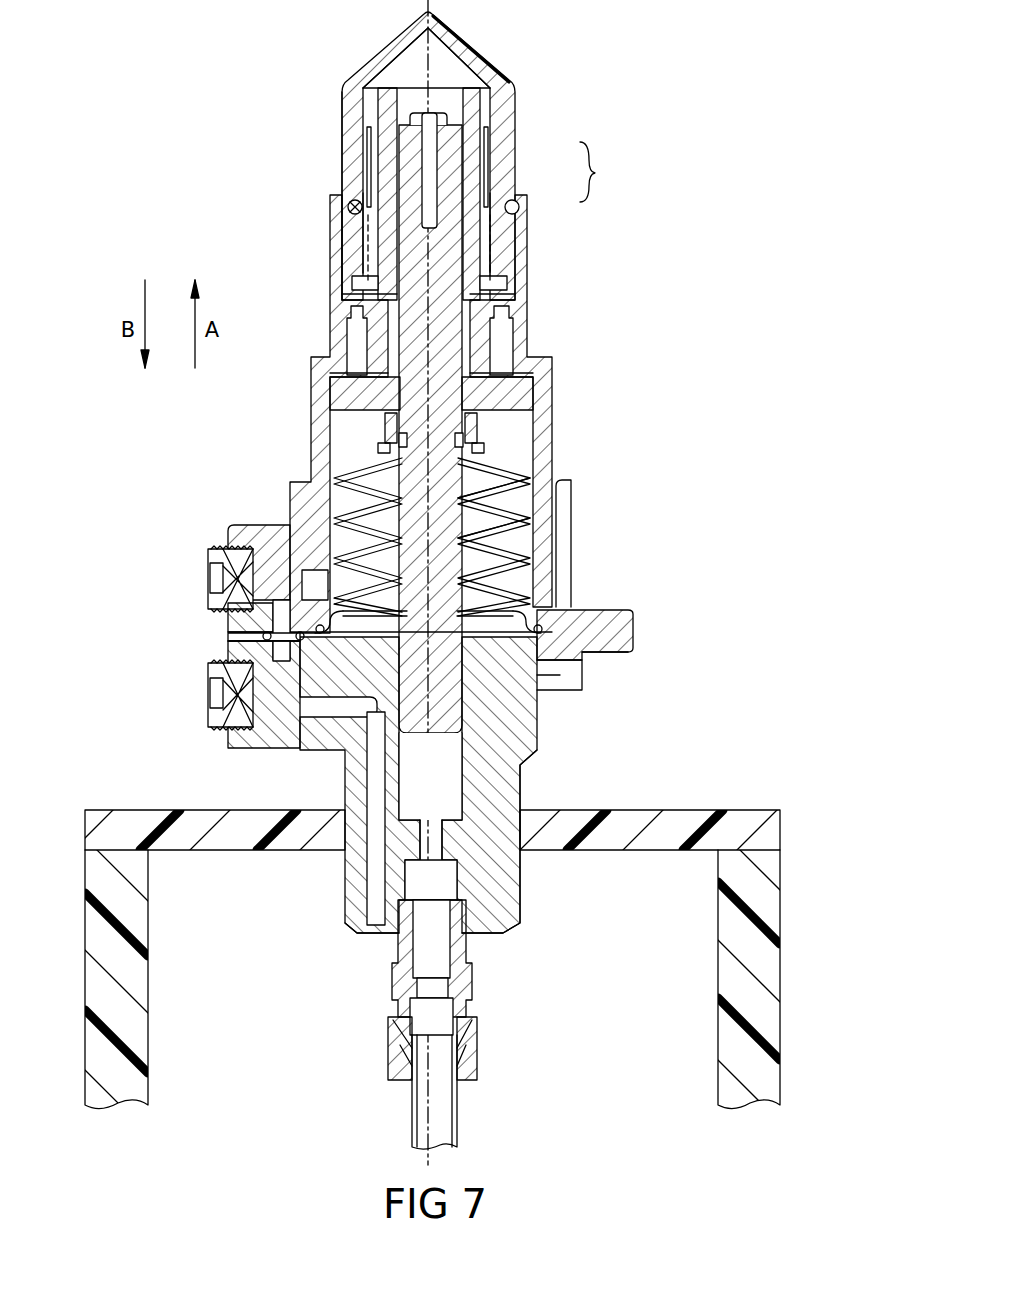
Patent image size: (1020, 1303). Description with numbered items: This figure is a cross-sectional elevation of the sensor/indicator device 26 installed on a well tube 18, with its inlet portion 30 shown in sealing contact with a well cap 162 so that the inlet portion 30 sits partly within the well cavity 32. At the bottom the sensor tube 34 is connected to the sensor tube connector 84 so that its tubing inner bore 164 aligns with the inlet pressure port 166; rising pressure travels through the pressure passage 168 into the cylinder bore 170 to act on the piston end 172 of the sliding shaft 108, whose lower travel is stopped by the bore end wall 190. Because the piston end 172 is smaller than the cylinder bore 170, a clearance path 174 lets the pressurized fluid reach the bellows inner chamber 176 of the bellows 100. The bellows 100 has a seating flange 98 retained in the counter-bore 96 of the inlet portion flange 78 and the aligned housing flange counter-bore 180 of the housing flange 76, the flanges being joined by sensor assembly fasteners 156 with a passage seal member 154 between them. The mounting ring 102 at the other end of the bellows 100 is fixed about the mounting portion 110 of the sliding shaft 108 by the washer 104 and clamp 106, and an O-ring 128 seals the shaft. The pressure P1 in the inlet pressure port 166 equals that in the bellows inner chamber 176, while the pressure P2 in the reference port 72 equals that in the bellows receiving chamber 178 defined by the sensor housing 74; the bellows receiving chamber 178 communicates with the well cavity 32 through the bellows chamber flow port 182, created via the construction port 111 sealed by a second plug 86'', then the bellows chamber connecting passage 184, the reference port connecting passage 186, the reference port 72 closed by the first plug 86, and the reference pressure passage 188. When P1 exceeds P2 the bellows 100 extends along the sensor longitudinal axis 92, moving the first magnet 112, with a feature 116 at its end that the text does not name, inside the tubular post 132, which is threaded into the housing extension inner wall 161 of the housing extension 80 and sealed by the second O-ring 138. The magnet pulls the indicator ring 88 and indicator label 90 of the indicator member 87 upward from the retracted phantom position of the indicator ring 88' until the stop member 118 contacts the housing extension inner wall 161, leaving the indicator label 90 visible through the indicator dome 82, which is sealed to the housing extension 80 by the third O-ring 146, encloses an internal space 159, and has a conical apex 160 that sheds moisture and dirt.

The sensor/indicator device 26 is at (666, 270).
The sensor longitudinal axis 92 is at (394, 37).
The conical apex 160 is at (455, 32).
The internal space 159 is at (458, 72).
The tubular post 132 is at (383, 100).
The indicator dome 82 is at (348, 118).
The housing extension 80 is at (343, 305).
The sensor housing 74 is at (548, 452).
The housing extension inner wall 161 is at (492, 322).
The sliding shaft 108 is at (470, 390).
The mounting portion 110 is at (405, 190).
The second O-ring 138 is at (497, 295).
The indicator ring 88 is at (473, 167).
The indicator label 90 is at (488, 172).
The indicator member 87 is at (602, 172).
The indicator ring (retracted position) 88' is at (481, 247).
The third O-ring 146 is at (347, 203).
The first magnet 112 is at (455, 145).
The piston cap 116 is at (447, 118).
The stop member 118 is at (348, 390).
The mounting ring 102 is at (466, 400).
The clamp 106 is at (390, 430).
The washer 104 is at (390, 448).
The O-ring 128 is at (462, 437).
The bellows chamber flow port 182 is at (314, 582).
The bellows 100 is at (517, 460).
The bellows receiving chamber 178 is at (517, 497).
The bellows inner chamber 176 is at (483, 513).
The pressure P1 is at (385, 480).
The pressure P2 is at (318, 535).
The housing flange counter-bore 180 is at (563, 595).
The housing flange 76 is at (625, 620).
The inlet portion flange 78 is at (615, 650).
The counter-bore 96 is at (554, 662).
The sensor assembly fasteners 156 is at (548, 684).
The piston end 172 is at (415, 728).
The clearance path 174 is at (468, 700).
The cylinder bore 170 is at (450, 757).
The pressure passage 168 is at (437, 836).
The bore end wall 190 is at (350, 848).
The reference pressure passage 188 is at (378, 925).
The inlet portion 30 is at (498, 862).
The construction port 111 is at (268, 556).
The second plug 86'' is at (192, 574).
The seating flange 98 is at (250, 587).
The bellows chamber connecting passage 184 is at (280, 617).
The passage seal member 154 is at (275, 636).
The reference port 72 is at (275, 712).
The first plug 86 is at (200, 695).
The reference port connecting passage 186 is at (282, 662).
The well cavity 32 is at (662, 858).
The well cap 162 is at (626, 818).
The well tube 18 is at (735, 940).
The inlet pressure port 166 is at (447, 887).
The sensor tube connector 84 is at (458, 990).
The sensor tube 34 is at (455, 1127).
The tubing inner bore 164 is at (418, 1120).